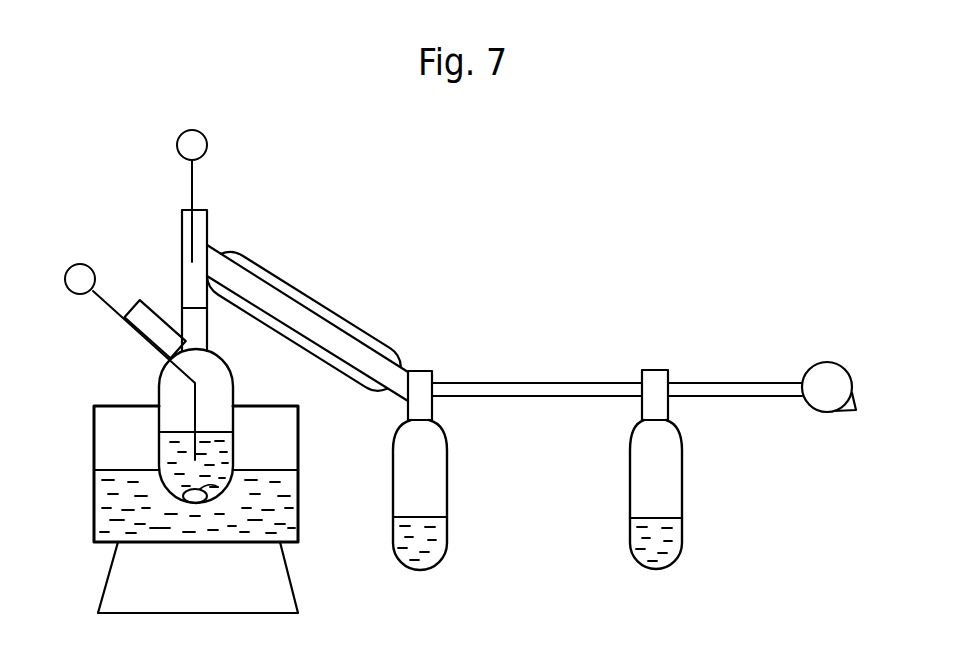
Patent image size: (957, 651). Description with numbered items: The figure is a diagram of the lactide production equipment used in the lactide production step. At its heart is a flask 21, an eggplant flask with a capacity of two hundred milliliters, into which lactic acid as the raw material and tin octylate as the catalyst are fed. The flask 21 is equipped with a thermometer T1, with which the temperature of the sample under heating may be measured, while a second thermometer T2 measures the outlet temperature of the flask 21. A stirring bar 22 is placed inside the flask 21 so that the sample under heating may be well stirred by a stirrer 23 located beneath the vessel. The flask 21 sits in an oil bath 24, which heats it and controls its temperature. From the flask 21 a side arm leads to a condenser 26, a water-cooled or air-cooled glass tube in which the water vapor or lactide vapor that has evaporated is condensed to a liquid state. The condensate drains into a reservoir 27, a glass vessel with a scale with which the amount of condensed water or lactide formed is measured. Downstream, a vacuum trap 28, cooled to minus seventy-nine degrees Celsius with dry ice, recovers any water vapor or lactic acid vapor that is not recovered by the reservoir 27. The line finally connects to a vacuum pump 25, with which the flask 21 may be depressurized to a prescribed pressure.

The thermometer T1 is at (92, 265).
The thermometer T2 is at (208, 145).
The flask 21 is at (157, 390).
The stirring bar 22 is at (210, 487).
The stirrer 23 is at (267, 582).
The oil bath 24 is at (298, 530).
The vacuum pump 25 is at (809, 369).
The condenser 26 is at (324, 304).
The reservoir 27 is at (447, 540).
The vacuum trap 28 is at (682, 543).